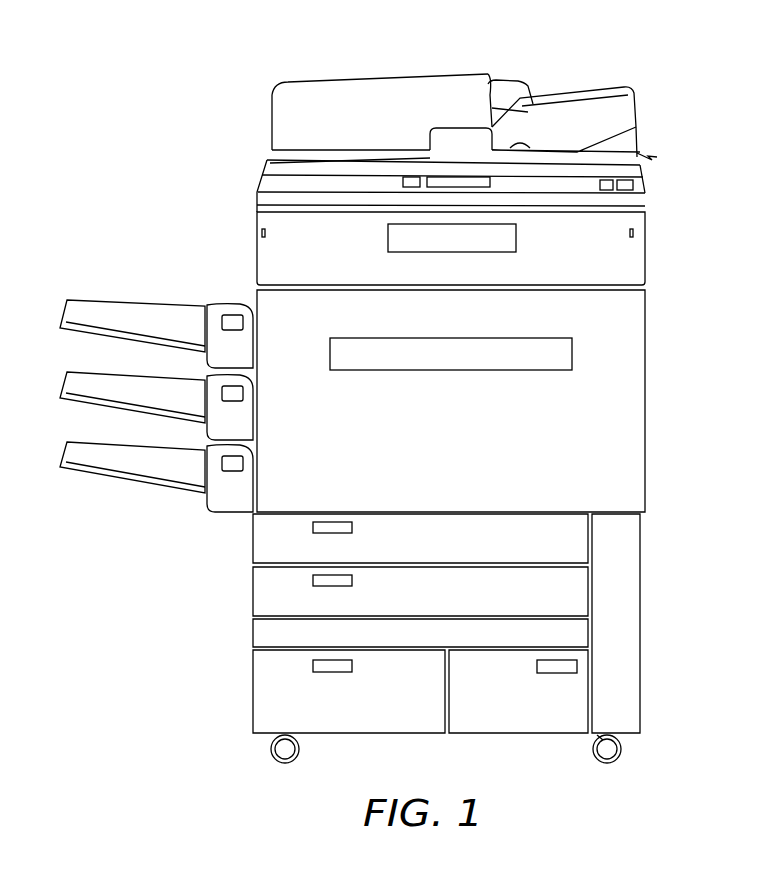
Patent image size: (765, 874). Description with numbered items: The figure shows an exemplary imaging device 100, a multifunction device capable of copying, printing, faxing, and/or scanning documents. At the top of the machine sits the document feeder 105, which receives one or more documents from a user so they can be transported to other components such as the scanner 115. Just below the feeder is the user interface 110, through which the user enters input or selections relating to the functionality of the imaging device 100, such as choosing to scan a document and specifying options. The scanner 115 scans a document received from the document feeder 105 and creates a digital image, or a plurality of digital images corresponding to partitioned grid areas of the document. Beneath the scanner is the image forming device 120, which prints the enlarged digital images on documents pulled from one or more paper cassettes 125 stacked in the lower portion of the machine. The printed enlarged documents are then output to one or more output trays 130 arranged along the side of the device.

The imaging device 100 is at (306, 60).
The document feeder 105 is at (583, 96).
The user interface 110 is at (284, 175).
The scanner 115 is at (388, 237).
The image forming device 120 is at (365, 338).
The paper cassettes 125 is at (262, 632).
The output trays 130 is at (85, 450).